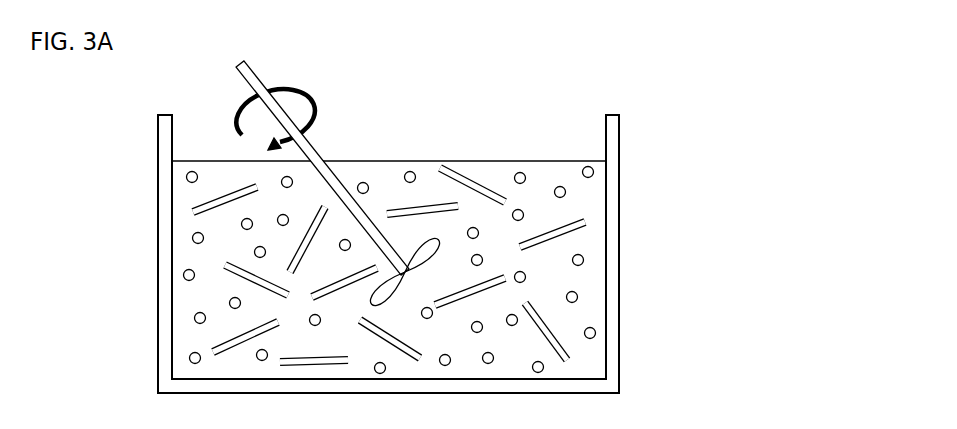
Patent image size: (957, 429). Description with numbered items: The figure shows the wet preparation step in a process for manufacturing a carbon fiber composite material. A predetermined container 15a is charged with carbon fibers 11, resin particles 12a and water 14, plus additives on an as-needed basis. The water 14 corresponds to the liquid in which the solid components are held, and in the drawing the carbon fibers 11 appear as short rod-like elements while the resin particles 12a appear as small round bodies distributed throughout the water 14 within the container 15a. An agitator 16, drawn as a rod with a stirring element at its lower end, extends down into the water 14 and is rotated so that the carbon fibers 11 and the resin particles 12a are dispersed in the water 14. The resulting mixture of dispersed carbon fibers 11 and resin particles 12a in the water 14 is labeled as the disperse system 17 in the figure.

The carbon fibers 11 is at (457, 172).
The resin particles 12a is at (411, 167).
The water 14 is at (584, 203).
The container 15a is at (620, 295).
The agitator 16 is at (252, 71).
The disperse system 17 is at (469, 194).